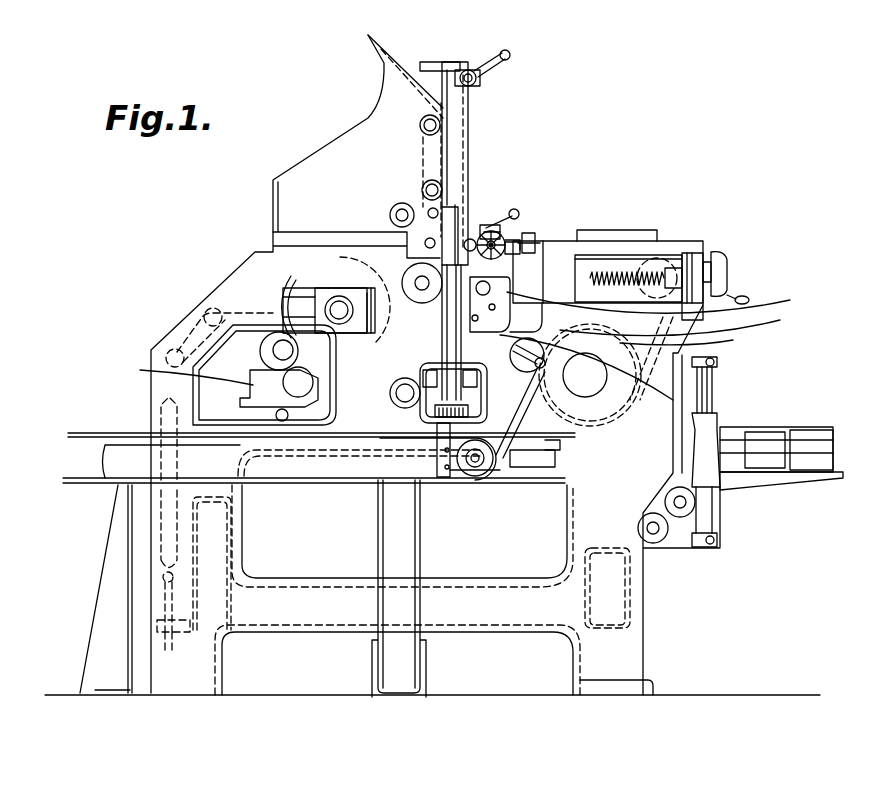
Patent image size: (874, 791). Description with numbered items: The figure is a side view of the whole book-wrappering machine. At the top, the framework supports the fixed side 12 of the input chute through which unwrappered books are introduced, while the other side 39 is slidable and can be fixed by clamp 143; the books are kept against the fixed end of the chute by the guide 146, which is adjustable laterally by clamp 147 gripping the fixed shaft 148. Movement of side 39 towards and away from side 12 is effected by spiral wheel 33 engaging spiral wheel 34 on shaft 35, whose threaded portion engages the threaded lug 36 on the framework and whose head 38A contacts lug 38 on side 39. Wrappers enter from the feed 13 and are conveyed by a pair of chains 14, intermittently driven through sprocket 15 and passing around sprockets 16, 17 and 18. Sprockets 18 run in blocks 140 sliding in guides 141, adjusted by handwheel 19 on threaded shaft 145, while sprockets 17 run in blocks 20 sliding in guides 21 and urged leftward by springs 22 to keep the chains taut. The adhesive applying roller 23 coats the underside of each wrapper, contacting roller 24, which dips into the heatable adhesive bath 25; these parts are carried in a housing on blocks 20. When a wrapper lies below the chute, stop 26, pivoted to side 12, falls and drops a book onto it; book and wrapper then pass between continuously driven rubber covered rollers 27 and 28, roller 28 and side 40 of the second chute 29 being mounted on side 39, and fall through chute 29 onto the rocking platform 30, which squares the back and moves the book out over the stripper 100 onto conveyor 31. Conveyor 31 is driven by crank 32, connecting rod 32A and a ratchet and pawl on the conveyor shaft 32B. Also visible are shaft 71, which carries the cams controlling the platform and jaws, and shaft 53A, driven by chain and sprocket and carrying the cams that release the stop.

The side of the chute 12 is at (376, 95).
The feed 13 is at (716, 430).
The chains 14 is at (586, 428).
The sprocket 15 is at (596, 415).
The sprockets 16 is at (388, 398).
The sprockets 17 is at (283, 252).
The sprockets 18 is at (683, 256).
The handwheel 19 is at (730, 262).
The blocks 20 is at (320, 327).
The guides 21 is at (305, 288).
The springs 22 is at (150, 508).
The adhesive applying roller 23 is at (270, 337).
The roller 24 is at (283, 380).
The adhesive bath 25 is at (179, 370).
The stop 26 is at (450, 195).
The rubber covered roller 27 is at (418, 280).
The rubber covered roller 28 is at (687, 323).
The second chute 29 is at (458, 365).
The rocking platform 30 is at (593, 390).
The conveyor 31 is at (80, 432).
The crank 32 is at (516, 430).
The connecting rod 32A is at (552, 452).
The conveyor shaft 32B is at (478, 468).
The spiral wheel 33 is at (520, 243).
The spiral wheel 34 is at (666, 296).
The shaft 35 is at (565, 258).
The threaded lug 36 is at (528, 252).
The lug 38 is at (498, 226).
The head of shaft 38A is at (488, 240).
The side of the chute 39 is at (470, 110).
The side of chute 40 is at (453, 345).
The shaft 53A is at (396, 205).
The shaft 71 is at (733, 340).
The stripper 100 is at (430, 442).
The blocks 140 is at (666, 270).
The guides 141 is at (632, 290).
The clamp 143 is at (497, 232).
The threaded shaft 145 is at (600, 268).
The guide 146 is at (413, 62).
The clamp 147 is at (474, 68).
The fixed shaft 148 is at (478, 78).